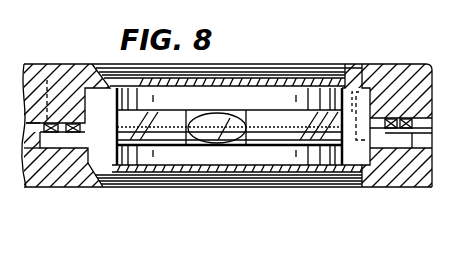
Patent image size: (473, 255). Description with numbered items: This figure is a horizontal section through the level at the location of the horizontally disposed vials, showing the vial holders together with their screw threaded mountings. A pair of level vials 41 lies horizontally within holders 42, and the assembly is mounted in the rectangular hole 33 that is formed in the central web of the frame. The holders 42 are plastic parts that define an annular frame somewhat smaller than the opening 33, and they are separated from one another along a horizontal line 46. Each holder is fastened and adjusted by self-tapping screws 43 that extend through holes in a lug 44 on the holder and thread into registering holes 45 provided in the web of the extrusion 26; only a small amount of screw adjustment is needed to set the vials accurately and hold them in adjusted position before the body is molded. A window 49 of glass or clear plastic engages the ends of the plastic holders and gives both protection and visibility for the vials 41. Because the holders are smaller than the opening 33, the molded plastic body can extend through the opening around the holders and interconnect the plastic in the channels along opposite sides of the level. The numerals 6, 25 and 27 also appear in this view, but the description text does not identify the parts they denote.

The housing bore 6 is at (20, 123).
The end block 25 is at (392, 55).
The extrusion 26 is at (415, 132).
The outer wall 27 is at (452, 84).
The rectangular hole 33 is at (68, 115).
The vials 41 is at (279, 120).
The holders 42 is at (348, 93).
The self-tapping screws 43 is at (50, 140).
The lug 44 is at (29, 167).
The holes 45 is at (47, 80).
The horizontal line 46 is at (346, 164).
The window 49 is at (245, 84).